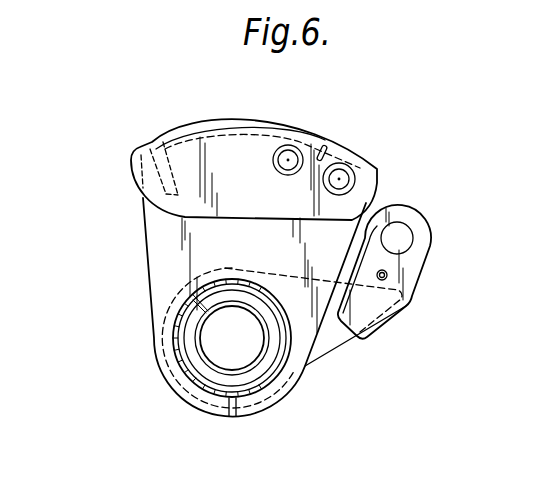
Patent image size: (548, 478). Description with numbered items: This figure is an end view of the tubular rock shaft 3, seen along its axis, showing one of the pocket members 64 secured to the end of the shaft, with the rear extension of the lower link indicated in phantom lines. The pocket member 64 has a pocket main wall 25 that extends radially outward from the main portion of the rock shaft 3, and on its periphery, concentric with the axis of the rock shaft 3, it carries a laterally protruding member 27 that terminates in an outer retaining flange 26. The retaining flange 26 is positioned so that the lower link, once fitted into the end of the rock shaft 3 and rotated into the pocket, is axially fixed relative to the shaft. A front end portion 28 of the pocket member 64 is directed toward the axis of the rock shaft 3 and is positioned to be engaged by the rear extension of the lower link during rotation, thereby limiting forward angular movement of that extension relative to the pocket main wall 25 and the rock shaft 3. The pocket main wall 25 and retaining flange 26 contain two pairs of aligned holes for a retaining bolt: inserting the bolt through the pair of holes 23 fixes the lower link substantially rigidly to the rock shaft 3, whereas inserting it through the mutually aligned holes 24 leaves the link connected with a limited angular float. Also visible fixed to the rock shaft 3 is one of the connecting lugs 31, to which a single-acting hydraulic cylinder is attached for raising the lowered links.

The rock shaft 3 is at (242, 351).
The aligned pair of holes 23 is at (288, 157).
The mutually aligned holes 24 is at (340, 178).
The pocket main wall 25 is at (256, 252).
The outer retaining flange 26 is at (256, 194).
The laterally protruding member 27 is at (188, 130).
The front end portion 28 is at (162, 189).
The connecting lugs 31 is at (418, 228).
The pocket member 64 is at (122, 268).